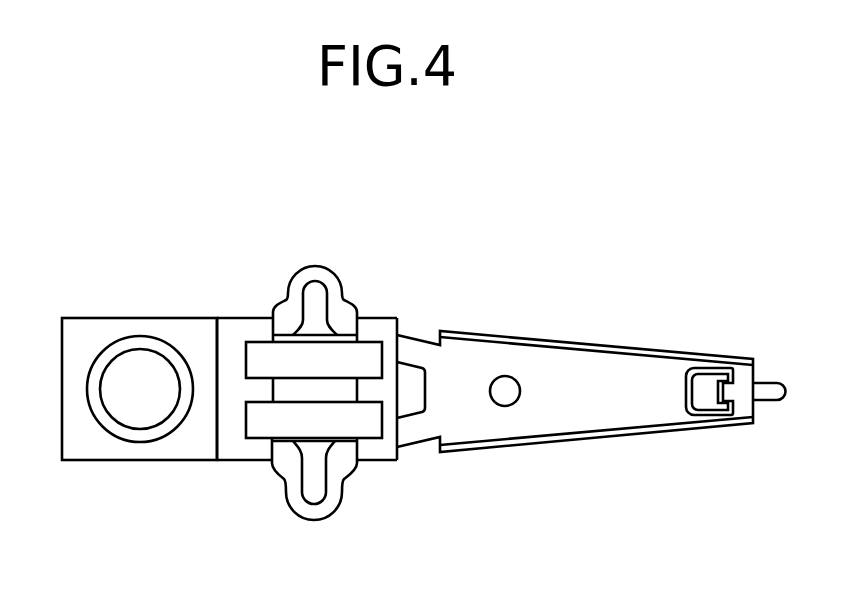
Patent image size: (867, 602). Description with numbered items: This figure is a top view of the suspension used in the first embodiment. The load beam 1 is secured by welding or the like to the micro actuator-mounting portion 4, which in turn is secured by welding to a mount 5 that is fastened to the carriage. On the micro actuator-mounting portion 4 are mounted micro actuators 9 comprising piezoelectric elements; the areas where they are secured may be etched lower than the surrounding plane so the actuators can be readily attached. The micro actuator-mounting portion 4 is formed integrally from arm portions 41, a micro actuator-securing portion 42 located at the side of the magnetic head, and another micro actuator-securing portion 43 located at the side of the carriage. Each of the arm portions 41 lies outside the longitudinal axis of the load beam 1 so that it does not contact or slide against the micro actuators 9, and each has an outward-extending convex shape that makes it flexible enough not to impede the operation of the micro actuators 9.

The load beam 1 is at (602, 403).
The micro actuator-mounting portion 4 is at (230, 333).
The mount 5 is at (82, 337).
The micro actuators 9 is at (343, 414).
The arm portions 41 is at (294, 292).
The micro actuator-securing portion 42 is at (374, 448).
The micro actuator-securing portion 43 is at (226, 430).